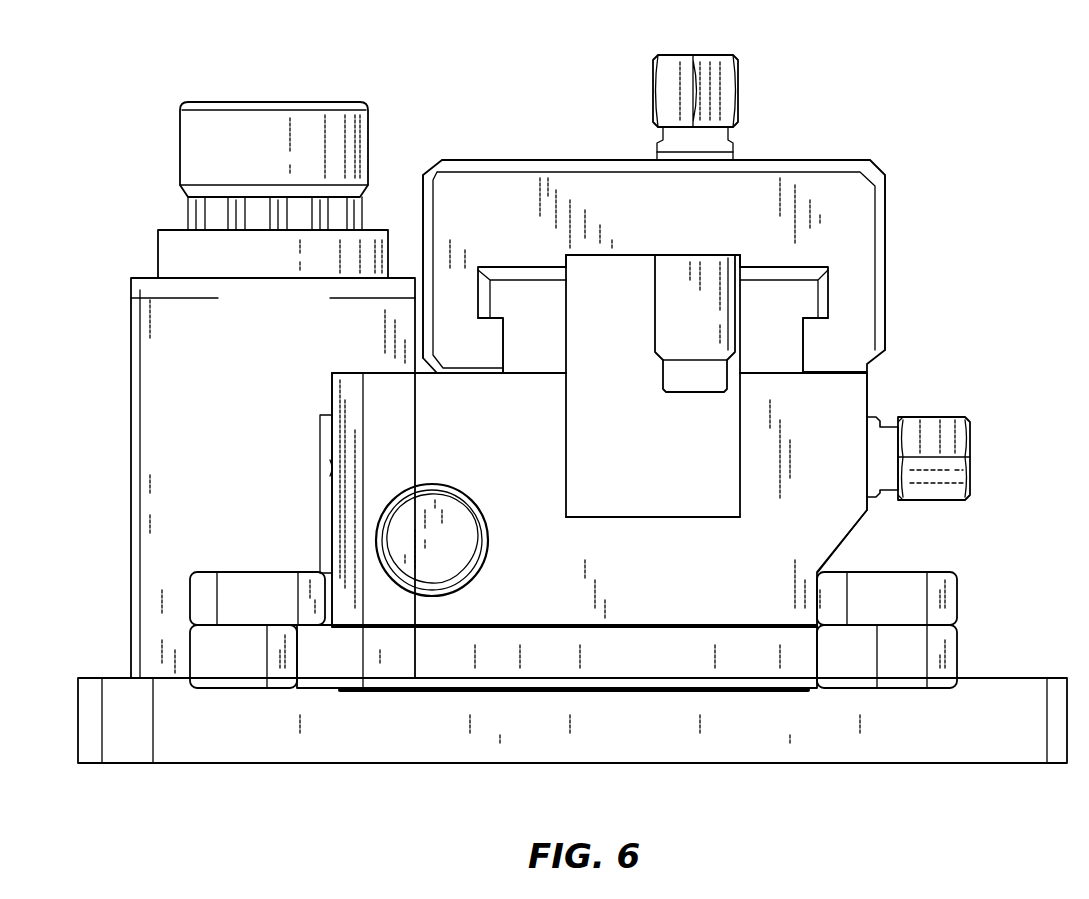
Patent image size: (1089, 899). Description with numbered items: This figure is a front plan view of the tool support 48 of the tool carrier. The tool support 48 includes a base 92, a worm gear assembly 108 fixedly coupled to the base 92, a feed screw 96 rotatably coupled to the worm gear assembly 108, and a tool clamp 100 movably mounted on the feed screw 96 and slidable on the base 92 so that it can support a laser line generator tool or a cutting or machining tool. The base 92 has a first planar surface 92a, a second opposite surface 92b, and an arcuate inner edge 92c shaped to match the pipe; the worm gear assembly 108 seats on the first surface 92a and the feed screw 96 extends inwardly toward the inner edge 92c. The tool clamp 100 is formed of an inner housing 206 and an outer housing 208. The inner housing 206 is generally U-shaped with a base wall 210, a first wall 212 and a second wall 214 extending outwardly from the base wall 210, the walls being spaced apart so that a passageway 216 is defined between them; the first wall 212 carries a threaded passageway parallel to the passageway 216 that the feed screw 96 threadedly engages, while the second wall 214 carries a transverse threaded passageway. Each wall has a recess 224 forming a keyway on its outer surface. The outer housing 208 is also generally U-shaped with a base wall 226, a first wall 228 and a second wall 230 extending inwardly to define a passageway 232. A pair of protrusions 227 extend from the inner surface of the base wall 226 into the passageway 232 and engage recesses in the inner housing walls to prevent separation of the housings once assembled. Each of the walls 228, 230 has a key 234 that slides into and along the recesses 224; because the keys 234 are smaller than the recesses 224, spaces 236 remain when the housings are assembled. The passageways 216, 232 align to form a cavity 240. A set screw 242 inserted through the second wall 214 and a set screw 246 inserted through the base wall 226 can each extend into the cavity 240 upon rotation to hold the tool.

The tool support 48 is at (943, 77).
The base 92 is at (990, 723).
The first planar surface 92a is at (1007, 677).
The second opposite surface 92b is at (880, 765).
The inner edge 92c is at (538, 742).
The feed screw 96 is at (475, 578).
The tool clamp 100 is at (888, 158).
The worm gear assembly 108 is at (168, 97).
The inner housing 206 is at (770, 160).
The outer housing 208 is at (856, 525).
The base wall 210 is at (655, 599).
The first wall 212 is at (449, 500).
The second wall 214 is at (803, 441).
The passageway 216 is at (622, 268).
The recess 224 is at (807, 338).
The base wall 226 is at (656, 207).
The protrusions 227 is at (530, 265).
The first wall 228 is at (455, 292).
The second wall 230 is at (850, 295).
The passageway 232 is at (657, 517).
The key 234 is at (493, 340).
The spaces 236 is at (752, 253).
The cavity 240 is at (660, 430).
The set screw 242 is at (957, 435).
The set screw 246 is at (673, 72).